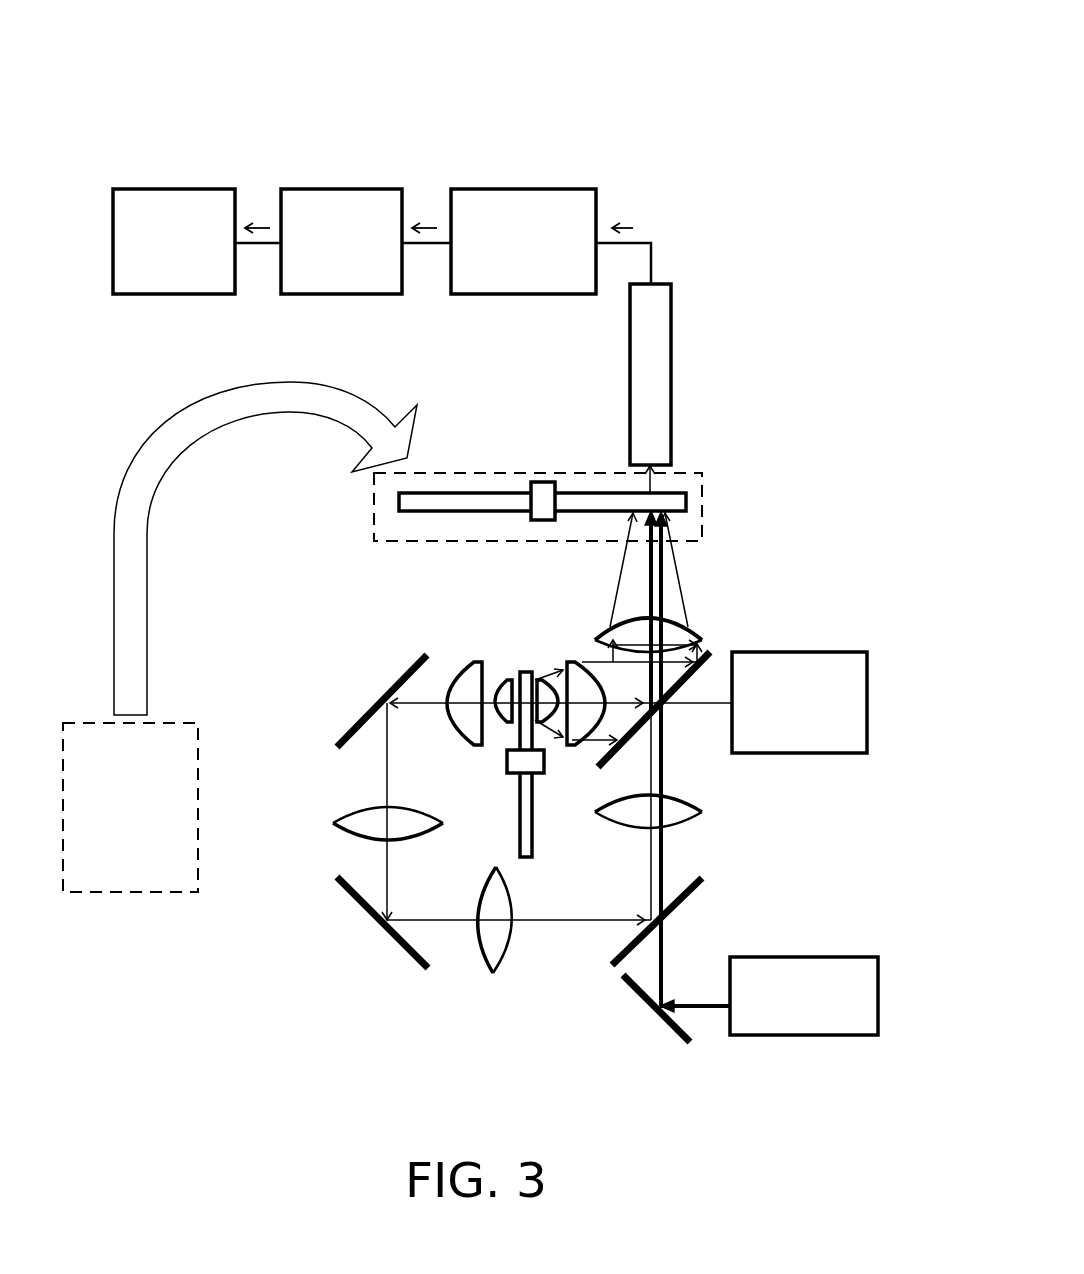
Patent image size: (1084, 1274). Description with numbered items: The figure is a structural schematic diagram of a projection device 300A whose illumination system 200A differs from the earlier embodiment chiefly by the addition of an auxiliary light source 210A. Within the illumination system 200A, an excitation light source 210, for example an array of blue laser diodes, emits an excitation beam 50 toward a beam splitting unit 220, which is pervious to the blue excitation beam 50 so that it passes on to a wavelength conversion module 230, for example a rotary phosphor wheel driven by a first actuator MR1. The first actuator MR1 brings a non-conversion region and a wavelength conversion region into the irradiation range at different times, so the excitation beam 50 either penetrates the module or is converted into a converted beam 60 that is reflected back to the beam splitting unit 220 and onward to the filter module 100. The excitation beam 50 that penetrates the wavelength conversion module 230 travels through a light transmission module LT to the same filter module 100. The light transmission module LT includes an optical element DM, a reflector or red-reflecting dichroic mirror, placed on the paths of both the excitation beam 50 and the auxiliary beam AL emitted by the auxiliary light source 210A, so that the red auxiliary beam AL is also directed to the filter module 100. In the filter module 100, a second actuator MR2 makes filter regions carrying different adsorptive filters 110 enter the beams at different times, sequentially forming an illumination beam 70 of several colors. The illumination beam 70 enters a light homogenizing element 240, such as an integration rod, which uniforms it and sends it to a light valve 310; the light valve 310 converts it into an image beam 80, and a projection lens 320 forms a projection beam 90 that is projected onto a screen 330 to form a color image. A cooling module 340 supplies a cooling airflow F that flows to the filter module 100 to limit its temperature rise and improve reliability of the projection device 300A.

The projection device 300A is at (833, 72).
The illumination system 200A is at (787, 311).
The filter module 100 is at (468, 472).
The adsorptive filters 110 is at (427, 511).
The second actuator MR2 is at (543, 482).
The cooling airflow F is at (160, 437).
The cooling module 340 is at (128, 893).
The screen 330 is at (172, 189).
The projection lens 320 is at (339, 189).
The light valve 310 is at (521, 189).
The projection beam 90 is at (268, 228).
The image beam 80 is at (436, 228).
The illumination beam 70 is at (633, 228).
The light homogenizing element 240 is at (671, 368).
The excitation light source 210 is at (800, 755).
The auxiliary light source 210A is at (800, 955).
The beam splitting unit 220 is at (710, 655).
The wavelength conversion module 230 is at (523, 672).
The first actuator MR1 is at (519, 795).
The light transmission module LT is at (338, 745).
The optical element DM is at (683, 1045).
The auxiliary beam AL is at (697, 1003).
The excitation beam 50 is at (690, 705).
The converted beam 60 is at (619, 583).